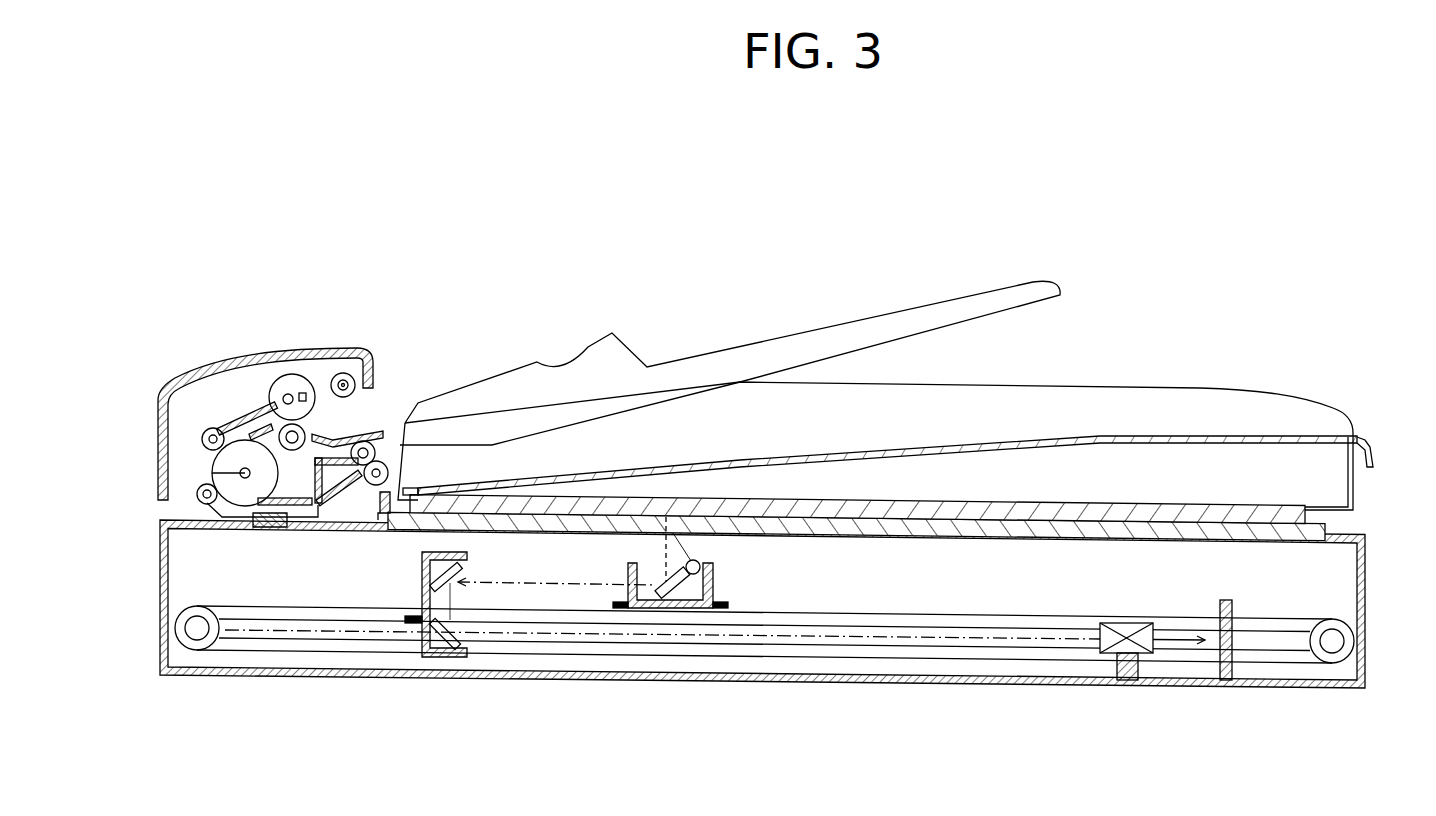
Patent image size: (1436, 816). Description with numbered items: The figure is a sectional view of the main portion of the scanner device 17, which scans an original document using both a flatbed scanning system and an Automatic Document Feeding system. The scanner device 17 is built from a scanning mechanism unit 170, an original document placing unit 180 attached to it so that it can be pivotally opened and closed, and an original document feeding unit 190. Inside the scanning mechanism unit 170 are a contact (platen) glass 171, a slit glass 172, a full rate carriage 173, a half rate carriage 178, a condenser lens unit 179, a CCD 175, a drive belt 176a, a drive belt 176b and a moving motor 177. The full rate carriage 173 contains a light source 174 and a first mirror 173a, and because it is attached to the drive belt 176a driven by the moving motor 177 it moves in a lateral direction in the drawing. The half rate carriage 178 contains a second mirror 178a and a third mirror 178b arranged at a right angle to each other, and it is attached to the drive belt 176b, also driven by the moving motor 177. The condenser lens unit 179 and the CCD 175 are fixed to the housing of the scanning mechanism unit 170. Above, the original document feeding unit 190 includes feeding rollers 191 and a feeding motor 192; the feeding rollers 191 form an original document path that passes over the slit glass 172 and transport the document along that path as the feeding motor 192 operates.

The scanner device 17 is at (720, 210).
The scanning mechanism unit 170 is at (1367, 568).
The contact (platen) glass 171 is at (1058, 540).
The slit glass 172 is at (272, 528).
The full rate carriage 173 is at (713, 588).
The first mirror 173a is at (663, 580).
The light source 174 is at (698, 565).
The CCD 175 is at (1207, 657).
The drive belt 176a is at (280, 650).
The drive belt 176b is at (367, 640).
The moving motor 177 is at (202, 650).
The half rate carriage 178 is at (450, 658).
The second mirror 178a is at (462, 576).
The third mirror 178b is at (460, 634).
The condenser lens unit 179 is at (1110, 655).
The original document placing unit 180 is at (1153, 388).
The original document feeding unit 190 is at (358, 348).
The feeding rollers 191 is at (352, 442).
The feeding motor 192 is at (212, 473).